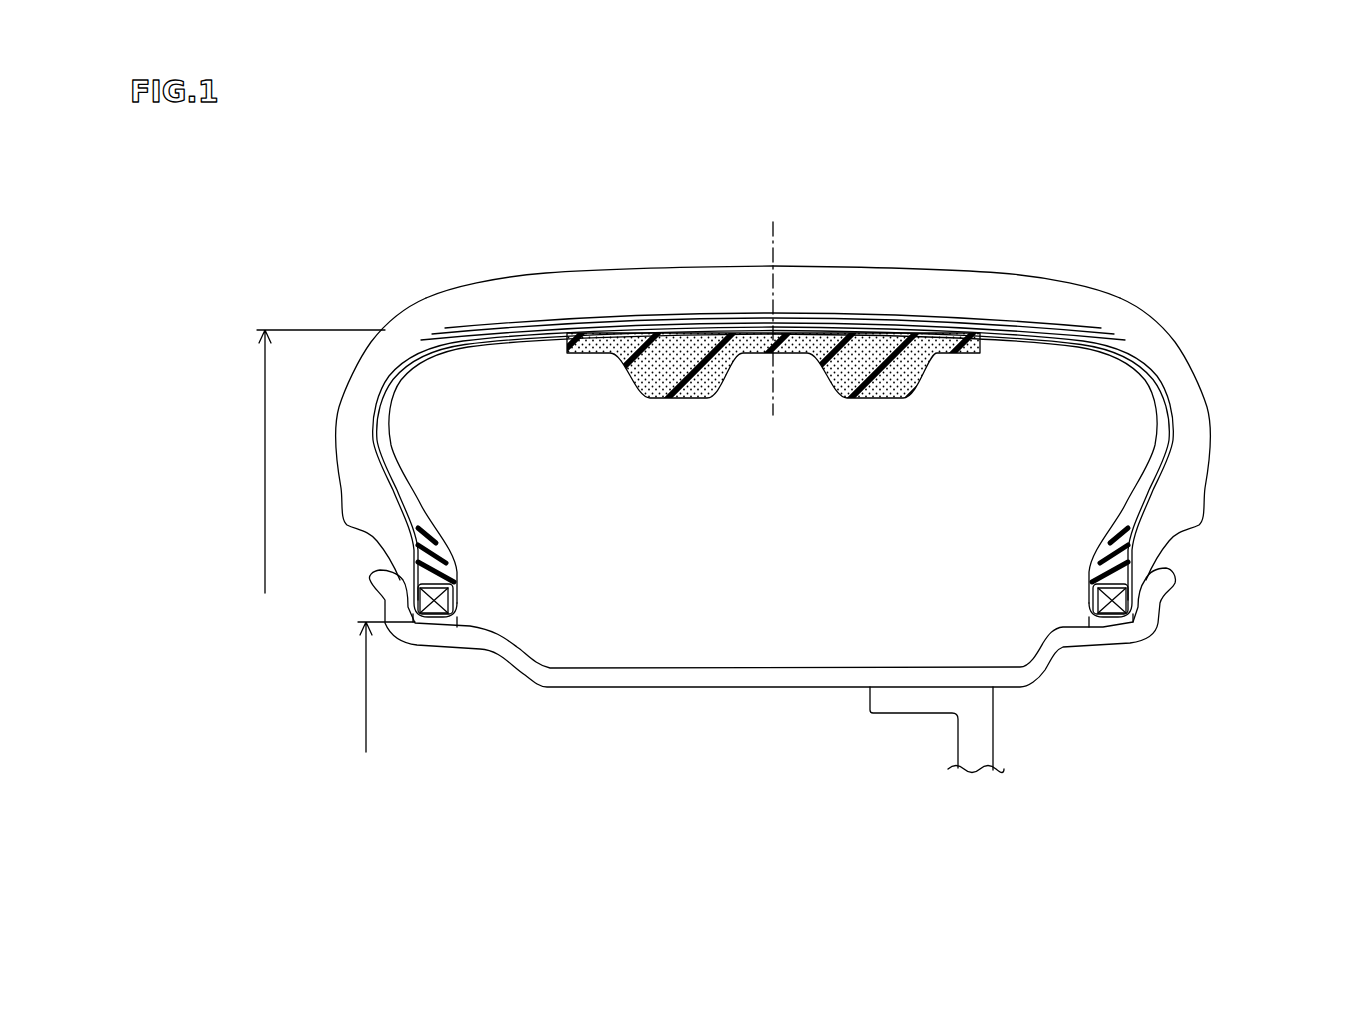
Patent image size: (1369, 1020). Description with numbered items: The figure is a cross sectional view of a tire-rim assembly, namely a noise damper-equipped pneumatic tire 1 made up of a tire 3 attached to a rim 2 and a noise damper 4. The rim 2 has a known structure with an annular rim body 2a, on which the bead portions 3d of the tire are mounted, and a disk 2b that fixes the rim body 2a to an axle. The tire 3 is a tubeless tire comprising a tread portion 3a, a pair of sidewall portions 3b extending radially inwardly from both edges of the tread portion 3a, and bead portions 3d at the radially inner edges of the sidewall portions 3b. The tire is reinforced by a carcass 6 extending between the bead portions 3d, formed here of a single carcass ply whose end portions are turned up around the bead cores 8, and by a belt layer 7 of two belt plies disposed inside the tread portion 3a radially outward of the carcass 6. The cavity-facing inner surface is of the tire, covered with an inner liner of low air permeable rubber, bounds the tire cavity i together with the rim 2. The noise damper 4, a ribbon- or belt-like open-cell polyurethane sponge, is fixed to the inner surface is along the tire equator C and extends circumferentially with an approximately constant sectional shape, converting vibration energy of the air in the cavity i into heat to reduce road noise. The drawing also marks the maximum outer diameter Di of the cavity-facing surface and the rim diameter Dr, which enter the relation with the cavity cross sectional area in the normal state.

The noise damper-equipped pneumatic tire 1 is at (1143, 240).
The rim 2 is at (1133, 693).
The rim body 2a is at (1030, 673).
The disk 2b is at (980, 737).
The tire 3 is at (1176, 331).
The tread portion 3a is at (840, 261).
The sidewall portions 3b is at (1217, 443).
The bead portions 3d is at (1160, 590).
The noise damper 4 is at (685, 345).
The carcass 6 is at (1165, 398).
The belt layer 7 is at (985, 318).
The bead cores 8 is at (1098, 597).
The tire inner surface is is at (1022, 347).
The tire cavity i is at (780, 543).
The tire equator C is at (772, 304).
The maximum outer diameter of the cavity-facing surface Di is at (319, 477).
The rim diameter Dr is at (383, 702).